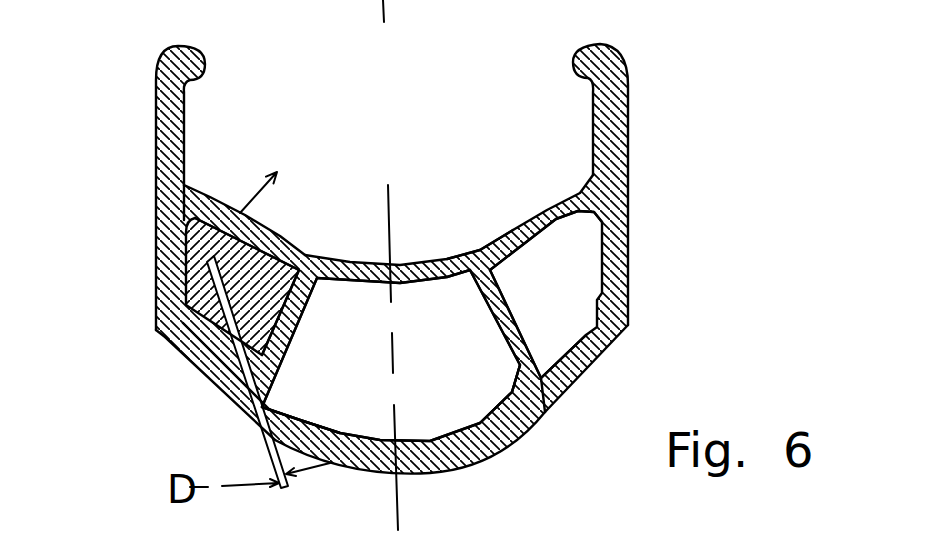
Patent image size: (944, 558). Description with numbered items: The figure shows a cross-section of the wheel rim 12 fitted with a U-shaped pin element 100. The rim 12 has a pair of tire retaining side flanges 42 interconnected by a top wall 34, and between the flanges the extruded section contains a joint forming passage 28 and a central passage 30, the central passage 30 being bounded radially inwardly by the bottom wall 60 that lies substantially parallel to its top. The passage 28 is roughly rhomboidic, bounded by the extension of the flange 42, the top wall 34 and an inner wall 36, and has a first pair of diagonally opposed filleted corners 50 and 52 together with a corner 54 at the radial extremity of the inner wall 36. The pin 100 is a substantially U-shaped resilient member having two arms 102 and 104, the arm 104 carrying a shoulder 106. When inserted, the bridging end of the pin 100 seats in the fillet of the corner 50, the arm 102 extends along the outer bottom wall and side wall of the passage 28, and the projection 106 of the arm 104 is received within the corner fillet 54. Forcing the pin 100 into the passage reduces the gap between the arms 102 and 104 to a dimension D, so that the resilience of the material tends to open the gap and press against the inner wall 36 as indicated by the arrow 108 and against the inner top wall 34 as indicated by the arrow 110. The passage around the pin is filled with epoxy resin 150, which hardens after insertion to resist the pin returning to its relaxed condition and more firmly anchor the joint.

The rim 12 is at (657, 121).
The joint forming passage 28 is at (562, 345).
The central passage 30 is at (391, 355).
The top wall 34 is at (412, 262).
The inner wall 36 is at (488, 320).
The side flange 42 is at (157, 196).
The filleted corner 50 is at (598, 206).
The filleted corner 52 is at (534, 420).
The corner 54 is at (478, 250).
The bottom wall 60 is at (443, 471).
The pin element 100 is at (200, 232).
The arm 102 is at (187, 325).
The arm 104 is at (290, 360).
The shoulder 106 is at (308, 250).
The arrow 108 is at (293, 360).
The arrow 110 is at (283, 190).
The epoxy resin 150 is at (215, 388).